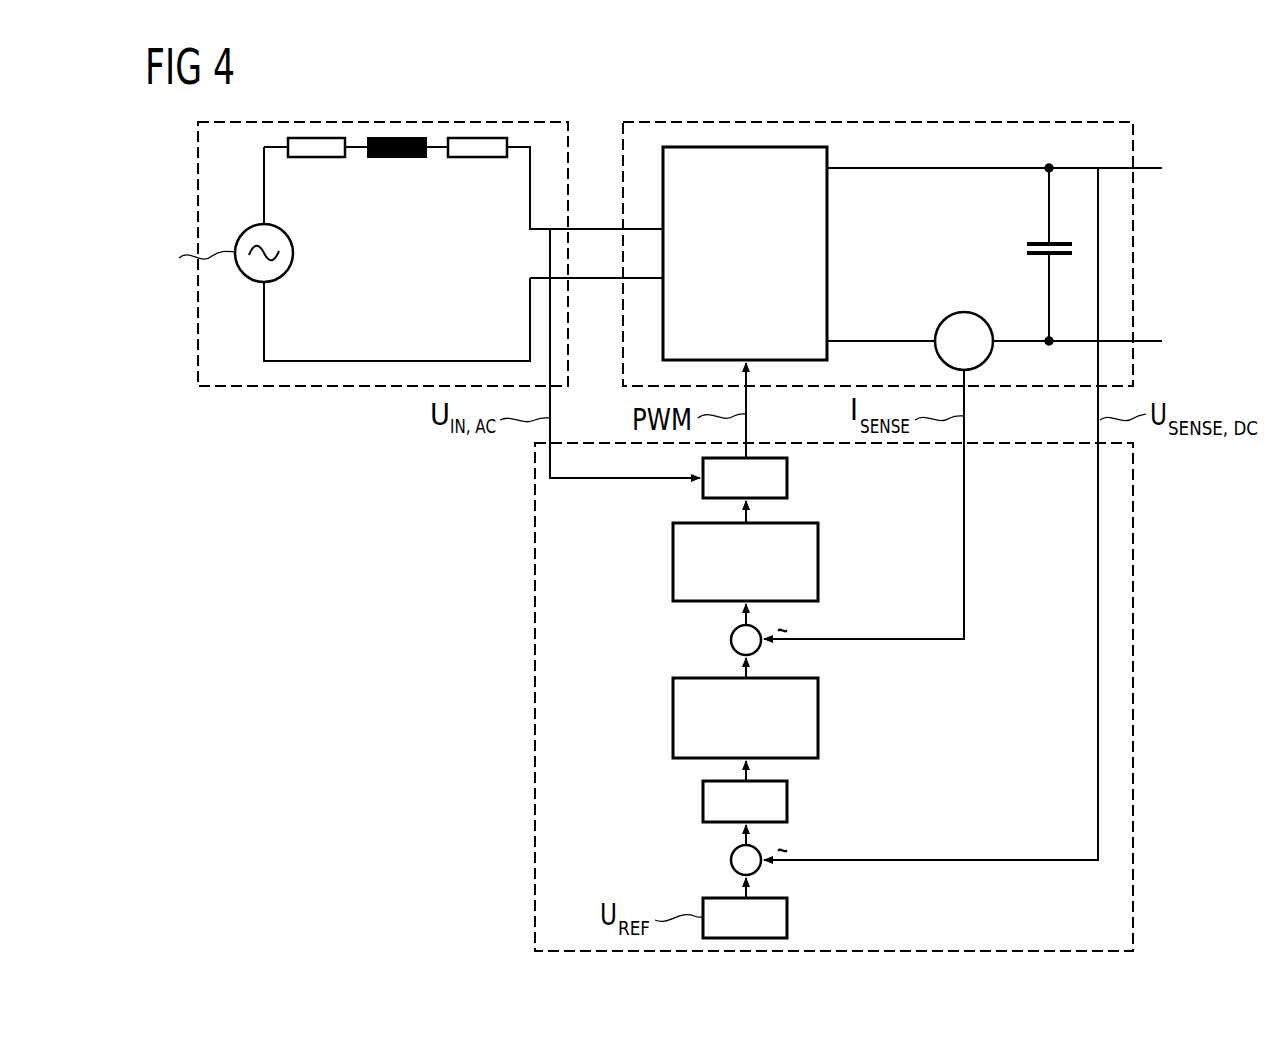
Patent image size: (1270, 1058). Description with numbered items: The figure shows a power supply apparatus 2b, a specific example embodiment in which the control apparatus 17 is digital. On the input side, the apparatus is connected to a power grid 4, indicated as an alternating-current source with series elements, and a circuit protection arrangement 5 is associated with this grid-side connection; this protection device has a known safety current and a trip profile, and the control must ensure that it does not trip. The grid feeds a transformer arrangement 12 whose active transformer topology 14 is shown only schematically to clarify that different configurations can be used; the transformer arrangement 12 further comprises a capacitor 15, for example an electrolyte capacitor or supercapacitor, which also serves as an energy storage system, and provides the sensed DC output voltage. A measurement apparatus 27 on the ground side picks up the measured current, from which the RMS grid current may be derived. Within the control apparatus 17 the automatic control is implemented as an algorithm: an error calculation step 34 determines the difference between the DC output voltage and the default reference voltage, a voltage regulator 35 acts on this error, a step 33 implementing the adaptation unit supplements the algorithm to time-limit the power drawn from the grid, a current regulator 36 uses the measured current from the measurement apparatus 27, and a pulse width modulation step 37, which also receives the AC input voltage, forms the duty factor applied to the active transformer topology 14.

The power grid 4 is at (380, 388).
The circuit protection arrangement 5 is at (474, 138).
The transformer arrangement 12 is at (885, 121).
The active transformer topology 14 is at (744, 146).
The capacitor 15 is at (1027, 248).
The measurement apparatus 27 is at (964, 312).
The control apparatus 17 is at (535, 674).
The power supply apparatus 2b is at (445, 592).
The pulse width modulation step 37 is at (790, 476).
The current regulator 36 is at (820, 561).
The step implementing the adaptation unit 33 is at (820, 717).
The voltage regulator 35 is at (790, 798).
The error calculation step 34 is at (731, 861).